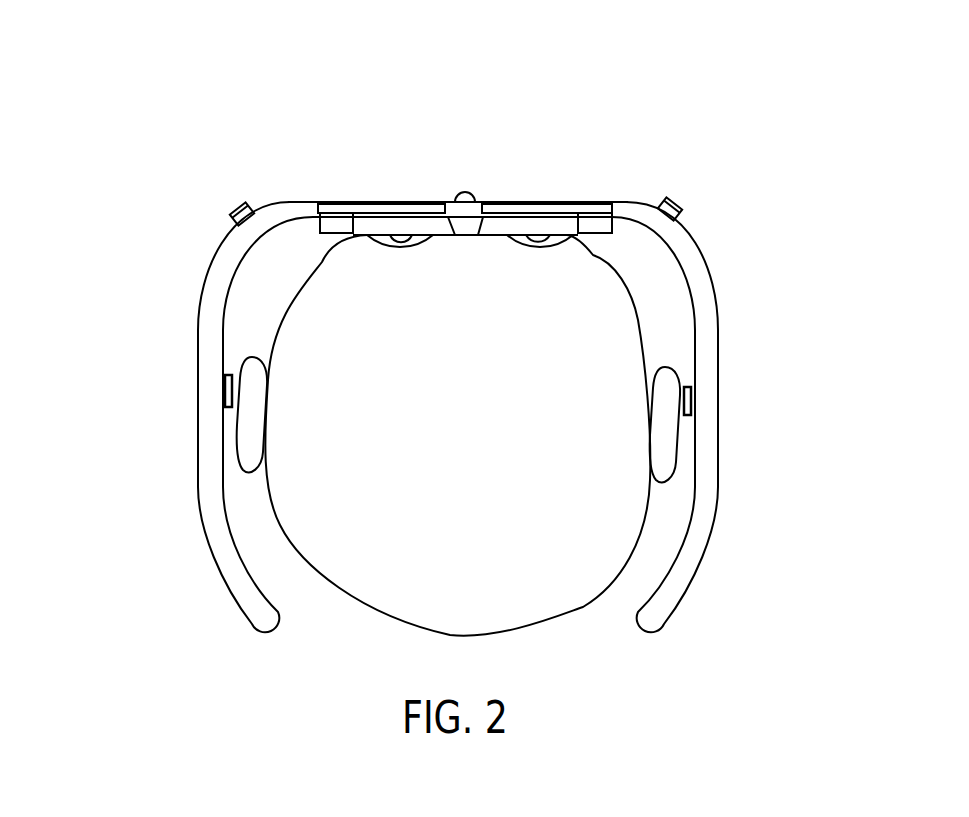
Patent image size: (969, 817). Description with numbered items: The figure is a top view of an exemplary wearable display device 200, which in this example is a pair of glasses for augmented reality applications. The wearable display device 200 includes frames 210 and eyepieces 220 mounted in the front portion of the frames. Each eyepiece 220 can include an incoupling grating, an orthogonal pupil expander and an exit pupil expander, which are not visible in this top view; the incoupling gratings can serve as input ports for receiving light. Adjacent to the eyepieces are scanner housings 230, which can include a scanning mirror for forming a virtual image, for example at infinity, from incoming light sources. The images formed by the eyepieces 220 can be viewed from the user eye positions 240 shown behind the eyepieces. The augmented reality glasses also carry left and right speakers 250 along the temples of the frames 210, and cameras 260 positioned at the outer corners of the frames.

The wearable display device 200 is at (758, 54).
The frames 210 is at (705, 556).
The eyepieces 220 is at (558, 204).
The scanner housings 230 is at (688, 146).
The user eye positions 240 is at (398, 270).
The left and right speakers 250 is at (226, 377).
The cameras 260 is at (753, 174).